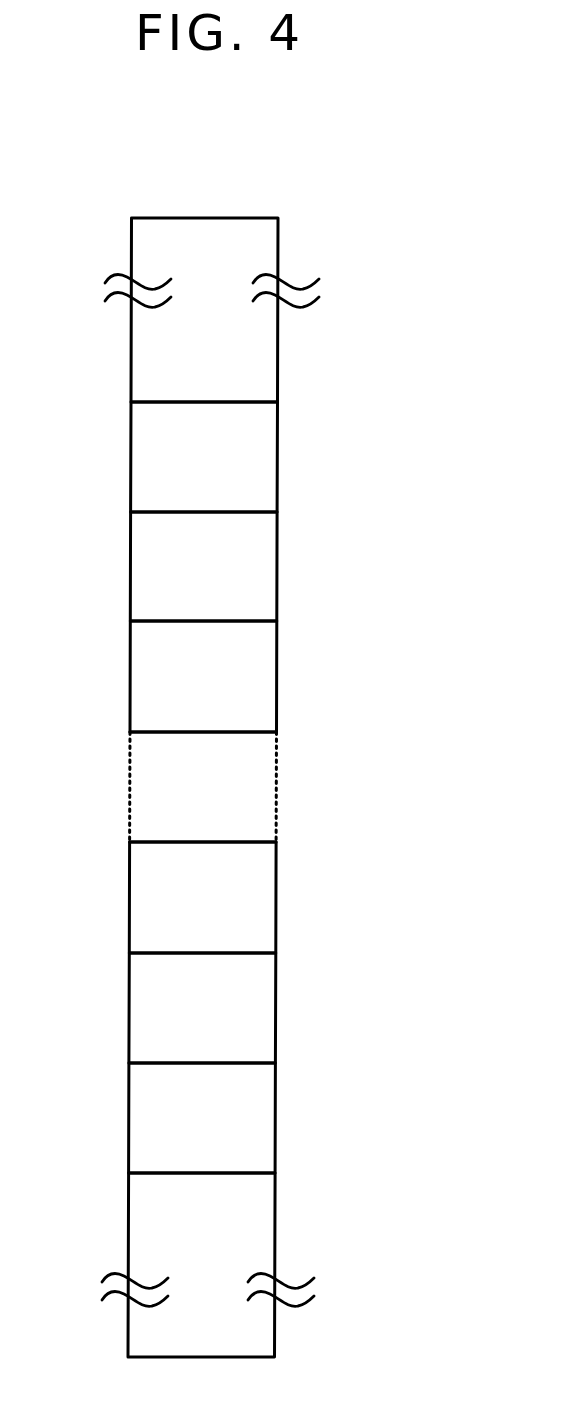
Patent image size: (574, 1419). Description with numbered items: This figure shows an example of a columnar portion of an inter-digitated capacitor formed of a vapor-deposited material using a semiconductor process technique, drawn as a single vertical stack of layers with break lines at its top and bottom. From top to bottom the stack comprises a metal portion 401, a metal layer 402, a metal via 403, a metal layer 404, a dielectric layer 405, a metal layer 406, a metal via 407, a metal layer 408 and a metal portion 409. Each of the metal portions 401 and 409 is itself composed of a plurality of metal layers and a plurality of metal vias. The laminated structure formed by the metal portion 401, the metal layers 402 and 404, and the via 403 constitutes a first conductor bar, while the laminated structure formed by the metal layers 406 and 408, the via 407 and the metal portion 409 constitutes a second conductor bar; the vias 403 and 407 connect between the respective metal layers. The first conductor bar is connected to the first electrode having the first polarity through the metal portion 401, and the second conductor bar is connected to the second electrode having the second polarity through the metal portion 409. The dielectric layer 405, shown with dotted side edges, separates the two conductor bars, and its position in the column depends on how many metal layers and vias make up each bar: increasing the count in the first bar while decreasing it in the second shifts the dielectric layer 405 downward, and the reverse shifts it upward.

The metal portion 401 is at (278, 353).
The metal layer 402 is at (277, 462).
The metal via 403 is at (277, 573).
The metal layer 404 is at (277, 682).
The dielectric layer 405 is at (276, 793).
The metal layer 406 is at (276, 903).
The metal via 407 is at (276, 1013).
The metal layer 408 is at (275, 1123).
The metal portion 409 is at (275, 1245).